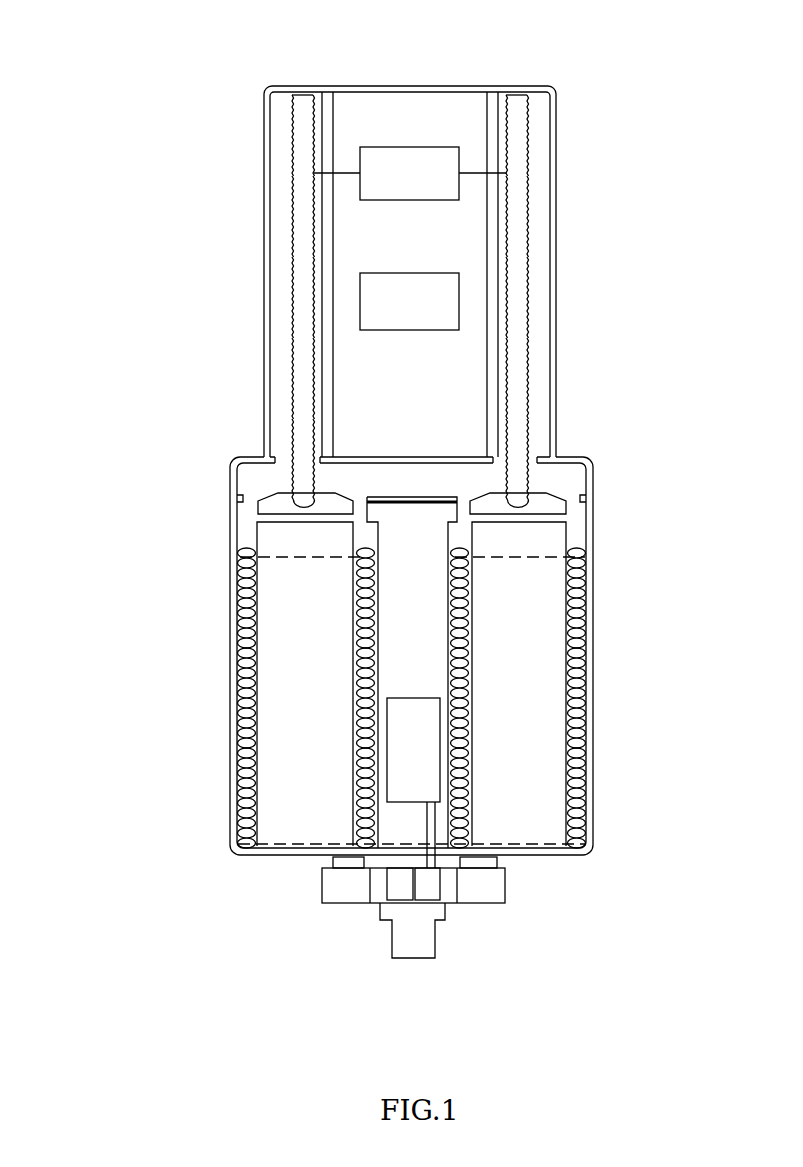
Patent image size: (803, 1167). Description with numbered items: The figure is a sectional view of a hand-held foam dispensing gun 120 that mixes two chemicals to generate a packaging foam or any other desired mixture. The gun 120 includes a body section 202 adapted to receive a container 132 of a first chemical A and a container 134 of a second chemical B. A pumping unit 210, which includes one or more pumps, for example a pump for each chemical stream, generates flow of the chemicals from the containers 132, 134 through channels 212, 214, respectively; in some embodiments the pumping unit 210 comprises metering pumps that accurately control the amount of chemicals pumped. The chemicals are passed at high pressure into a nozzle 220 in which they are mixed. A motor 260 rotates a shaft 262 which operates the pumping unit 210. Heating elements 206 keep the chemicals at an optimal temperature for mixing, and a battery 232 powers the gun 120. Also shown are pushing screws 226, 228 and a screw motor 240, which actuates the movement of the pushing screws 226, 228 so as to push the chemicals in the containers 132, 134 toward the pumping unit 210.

The hand-held foam dispensing gun 120 is at (122, 95).
The screw motor 240 is at (412, 148).
The battery 232 is at (410, 273).
The pushing screw 226 is at (300, 276).
The pushing screw 228 is at (532, 330).
The body section 202 is at (596, 662).
The container 132 is at (285, 660).
The container 134 is at (550, 723).
The heating elements 206 is at (365, 823).
The motor 260 is at (404, 698).
The shaft 262 is at (436, 862).
The channel 212 is at (318, 862).
The channel 214 is at (500, 862).
The pumping unit 210 is at (492, 885).
The nozzle 220 is at (413, 958).